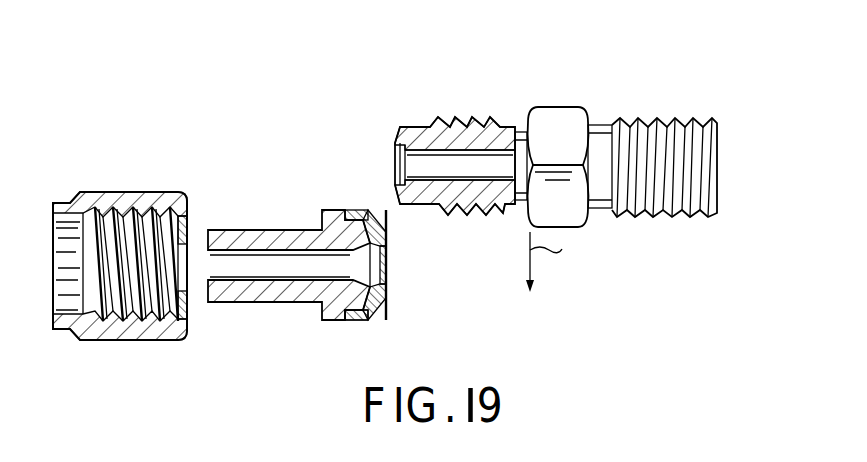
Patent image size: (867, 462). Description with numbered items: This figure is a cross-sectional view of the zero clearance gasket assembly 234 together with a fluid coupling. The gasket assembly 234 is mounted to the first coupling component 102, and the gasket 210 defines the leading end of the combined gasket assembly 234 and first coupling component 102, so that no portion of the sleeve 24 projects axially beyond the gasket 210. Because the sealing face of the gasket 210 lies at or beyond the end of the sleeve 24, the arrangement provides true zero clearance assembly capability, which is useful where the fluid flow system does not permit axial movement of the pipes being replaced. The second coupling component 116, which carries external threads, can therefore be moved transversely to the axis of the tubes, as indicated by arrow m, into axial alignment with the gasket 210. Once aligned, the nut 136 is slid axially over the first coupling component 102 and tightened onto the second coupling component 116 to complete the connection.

The nut 136 is at (140, 193).
The first coupling component 102 is at (242, 226).
The gasket assembly 234 is at (360, 206).
The gasket 210 is at (385, 297).
The sleeve 24 is at (358, 316).
The second coupling component 116 is at (563, 102).
The arrow m is at (560, 262).